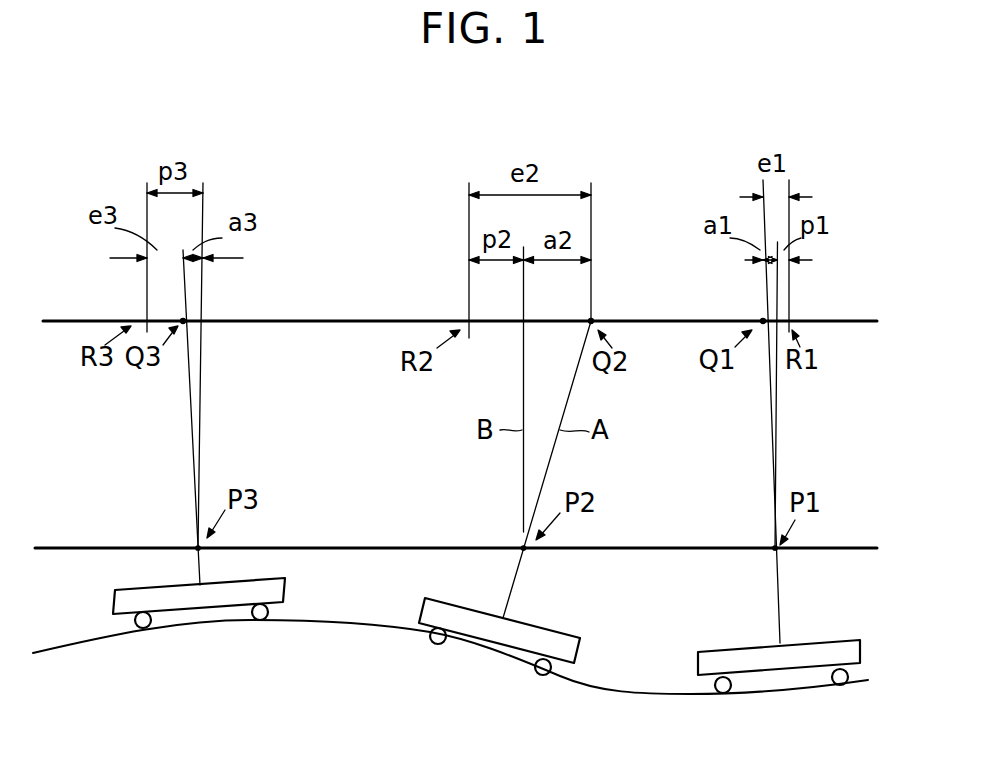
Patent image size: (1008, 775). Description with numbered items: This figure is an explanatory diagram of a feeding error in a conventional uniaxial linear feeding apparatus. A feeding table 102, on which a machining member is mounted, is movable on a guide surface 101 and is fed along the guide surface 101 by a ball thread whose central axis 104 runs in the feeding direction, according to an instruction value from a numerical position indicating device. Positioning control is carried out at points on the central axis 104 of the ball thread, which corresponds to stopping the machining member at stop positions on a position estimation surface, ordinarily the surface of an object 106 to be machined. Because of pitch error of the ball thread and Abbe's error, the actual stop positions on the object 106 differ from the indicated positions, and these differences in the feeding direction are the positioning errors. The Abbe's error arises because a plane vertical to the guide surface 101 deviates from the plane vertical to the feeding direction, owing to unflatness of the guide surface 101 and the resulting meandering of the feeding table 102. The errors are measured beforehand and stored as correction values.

The guide surface 101 is at (627, 686).
The feeding table 102 is at (840, 648).
The central axis of the ball thread 104 is at (833, 547).
The object to be machined 106 is at (862, 323).